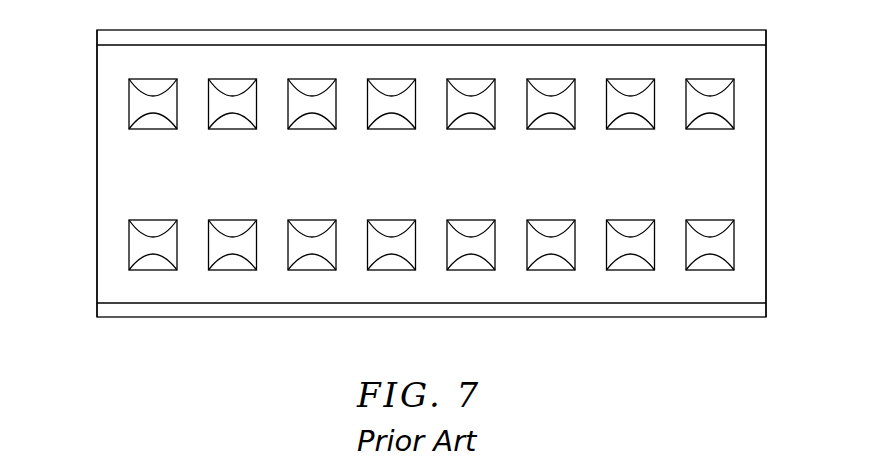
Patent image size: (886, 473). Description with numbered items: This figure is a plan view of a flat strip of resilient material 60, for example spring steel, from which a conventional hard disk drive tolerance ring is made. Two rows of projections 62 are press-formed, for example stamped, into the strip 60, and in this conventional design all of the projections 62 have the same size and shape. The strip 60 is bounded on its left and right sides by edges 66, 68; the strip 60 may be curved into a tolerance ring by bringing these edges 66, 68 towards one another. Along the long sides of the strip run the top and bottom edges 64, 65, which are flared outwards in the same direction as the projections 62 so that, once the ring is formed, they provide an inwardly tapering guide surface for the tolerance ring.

The strip of resilient material 60 is at (766, 160).
The projections 62 is at (540, 130).
The top edge 64 is at (670, 40).
The bottom edge 65 is at (647, 310).
The edge 66 is at (766, 105).
The edge 68 is at (97, 158).